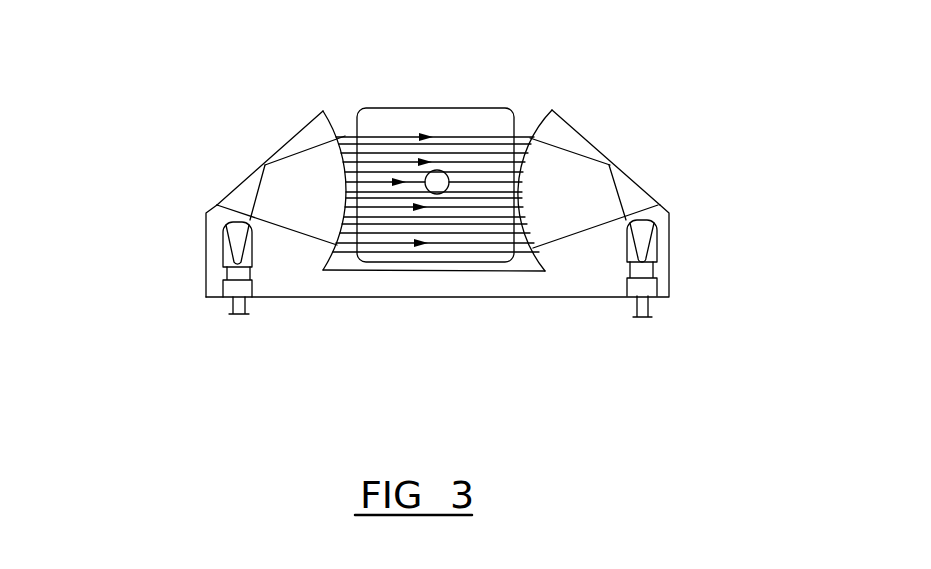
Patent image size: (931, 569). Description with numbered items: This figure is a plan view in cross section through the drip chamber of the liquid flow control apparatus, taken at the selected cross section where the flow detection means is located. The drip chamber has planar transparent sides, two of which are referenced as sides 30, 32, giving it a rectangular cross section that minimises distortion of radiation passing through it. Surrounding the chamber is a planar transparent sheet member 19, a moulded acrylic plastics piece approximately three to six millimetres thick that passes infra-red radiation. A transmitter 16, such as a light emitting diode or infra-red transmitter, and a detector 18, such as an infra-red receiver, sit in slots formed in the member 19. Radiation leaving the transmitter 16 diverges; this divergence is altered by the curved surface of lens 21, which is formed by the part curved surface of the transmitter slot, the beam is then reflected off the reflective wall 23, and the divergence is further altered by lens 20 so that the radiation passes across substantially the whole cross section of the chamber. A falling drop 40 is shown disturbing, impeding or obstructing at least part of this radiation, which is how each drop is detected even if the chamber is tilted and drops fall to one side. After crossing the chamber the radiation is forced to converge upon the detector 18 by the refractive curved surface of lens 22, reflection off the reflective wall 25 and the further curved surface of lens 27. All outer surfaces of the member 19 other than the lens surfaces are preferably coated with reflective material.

The transmitter 16 is at (223, 297).
The detector 18 is at (657, 294).
The transparent sheet member 19 is at (474, 286).
The second part curved surface transmitting lens 20 is at (349, 135).
The first part curved surface transmitting lens 21 is at (206, 212).
The first part curved surface receiving lens 22 is at (552, 110).
The reflective transmitting surface 23 is at (238, 183).
The reflective receiving surface 25 is at (587, 141).
The second part curved surface receiving lens 27 is at (652, 208).
The side of drip chamber 30 is at (448, 108).
The side of drip chamber 32 is at (412, 265).
The drop 40 is at (444, 170).